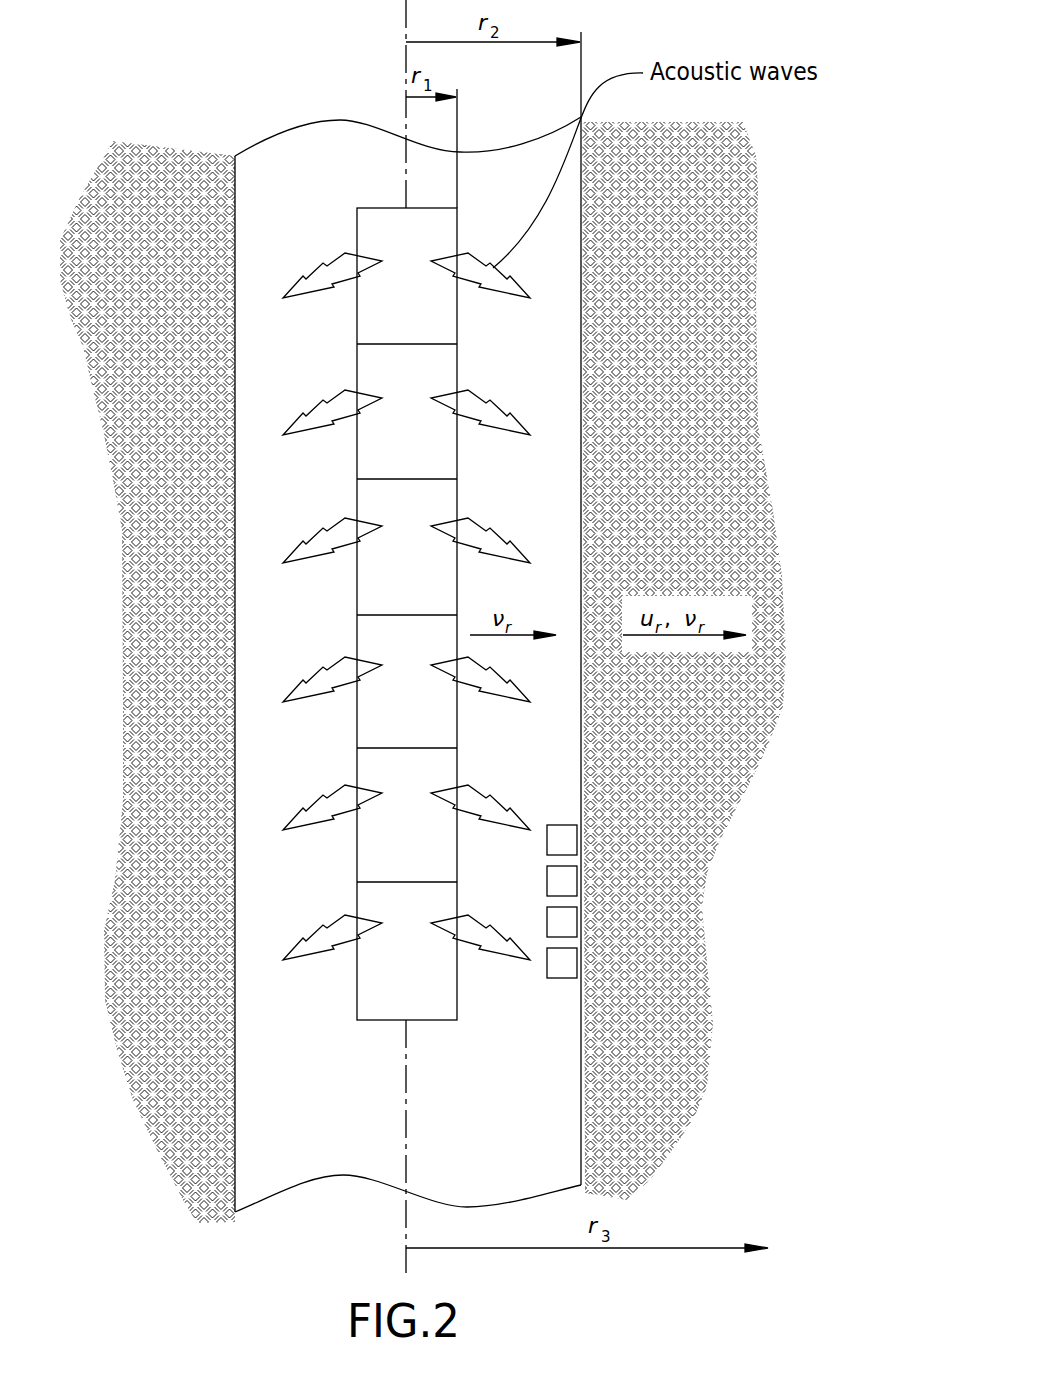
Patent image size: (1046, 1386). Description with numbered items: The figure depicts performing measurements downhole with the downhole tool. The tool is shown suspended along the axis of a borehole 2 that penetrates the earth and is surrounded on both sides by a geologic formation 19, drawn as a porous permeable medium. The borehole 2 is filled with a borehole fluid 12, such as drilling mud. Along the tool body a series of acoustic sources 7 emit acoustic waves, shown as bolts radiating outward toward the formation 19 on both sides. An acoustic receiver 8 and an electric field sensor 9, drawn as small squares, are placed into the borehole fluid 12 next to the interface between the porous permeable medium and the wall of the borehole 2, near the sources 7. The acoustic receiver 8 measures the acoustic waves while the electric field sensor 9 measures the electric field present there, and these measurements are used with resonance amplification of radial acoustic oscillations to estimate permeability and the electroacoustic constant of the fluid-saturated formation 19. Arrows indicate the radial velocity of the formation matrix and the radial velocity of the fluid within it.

The borehole 2 is at (263, 152).
The geologic formation 19 is at (697, 165).
The acoustic source 7 is at (366, 432).
The acoustic receiver 8 is at (548, 884).
The electric field sensor 9 is at (548, 965).
The borehole fluid 12 is at (287, 1175).